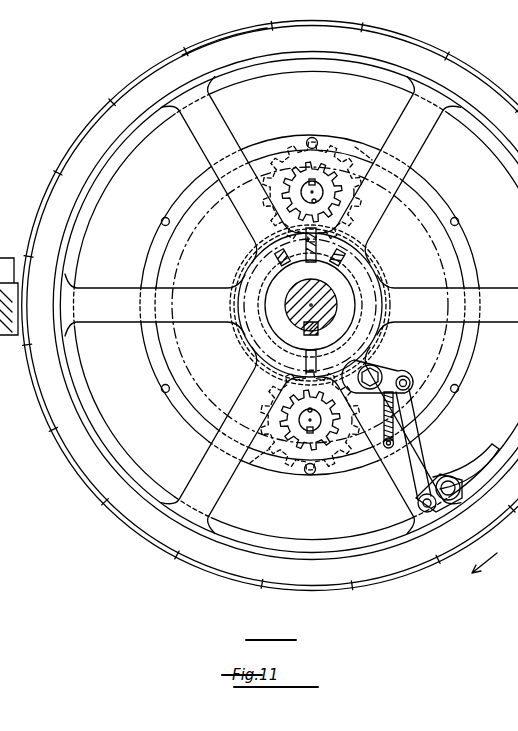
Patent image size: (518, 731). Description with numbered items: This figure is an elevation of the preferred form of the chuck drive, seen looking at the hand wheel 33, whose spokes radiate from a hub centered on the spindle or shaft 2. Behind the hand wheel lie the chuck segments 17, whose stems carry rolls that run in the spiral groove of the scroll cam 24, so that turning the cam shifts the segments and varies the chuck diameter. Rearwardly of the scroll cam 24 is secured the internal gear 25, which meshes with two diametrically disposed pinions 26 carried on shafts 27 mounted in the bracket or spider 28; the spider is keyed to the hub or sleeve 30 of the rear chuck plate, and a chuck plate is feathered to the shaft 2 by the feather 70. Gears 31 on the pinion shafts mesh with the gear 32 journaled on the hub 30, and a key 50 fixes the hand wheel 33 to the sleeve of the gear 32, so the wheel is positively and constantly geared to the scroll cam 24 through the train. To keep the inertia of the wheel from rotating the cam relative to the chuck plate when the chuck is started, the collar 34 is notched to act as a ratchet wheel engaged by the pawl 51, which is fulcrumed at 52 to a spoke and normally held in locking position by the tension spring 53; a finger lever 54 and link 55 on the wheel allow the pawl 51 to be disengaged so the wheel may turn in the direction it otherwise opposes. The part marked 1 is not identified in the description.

The wheel 1 is at (478, 64).
The spindle 2 is at (334, 291).
The chuck segments 17 is at (110, 100).
The scroll cam 24 is at (311, 82).
The internal gear 25 is at (202, 197).
The pinions 26 is at (363, 152).
The shafts 27 is at (284, 201).
The bracket or spider 28 is at (376, 204).
The hub or sleeve 30 is at (0, 280).
The gears 31 is at (329, 157).
The gear 32 is at (258, 368).
The hand wheel 33 is at (221, 45).
The collar 34 is at (253, 308).
The key 50 is at (8, 215).
The pawl 51 is at (391, 375).
The fulcrum 52 is at (373, 373).
The tension spring 53 is at (395, 407).
The finger lever 54 is at (493, 447).
The link 55 is at (410, 438).
The feather 70 is at (305, 333).